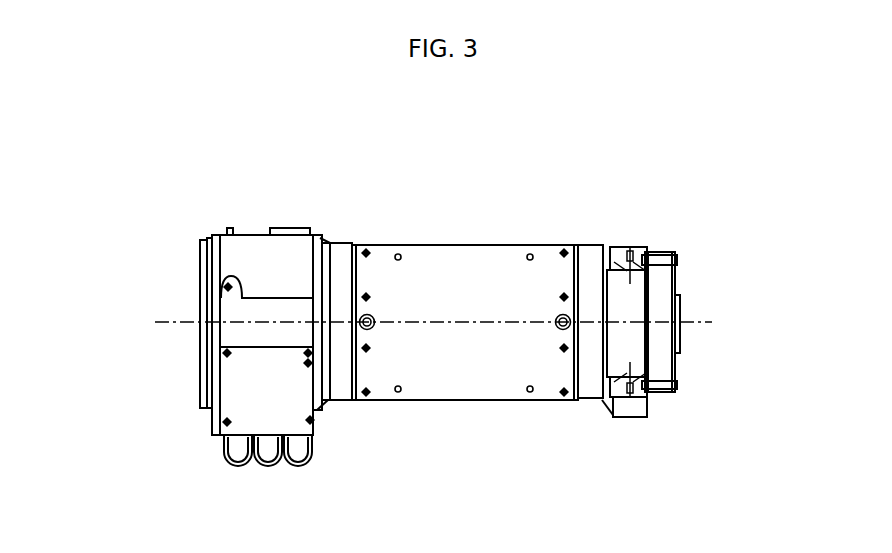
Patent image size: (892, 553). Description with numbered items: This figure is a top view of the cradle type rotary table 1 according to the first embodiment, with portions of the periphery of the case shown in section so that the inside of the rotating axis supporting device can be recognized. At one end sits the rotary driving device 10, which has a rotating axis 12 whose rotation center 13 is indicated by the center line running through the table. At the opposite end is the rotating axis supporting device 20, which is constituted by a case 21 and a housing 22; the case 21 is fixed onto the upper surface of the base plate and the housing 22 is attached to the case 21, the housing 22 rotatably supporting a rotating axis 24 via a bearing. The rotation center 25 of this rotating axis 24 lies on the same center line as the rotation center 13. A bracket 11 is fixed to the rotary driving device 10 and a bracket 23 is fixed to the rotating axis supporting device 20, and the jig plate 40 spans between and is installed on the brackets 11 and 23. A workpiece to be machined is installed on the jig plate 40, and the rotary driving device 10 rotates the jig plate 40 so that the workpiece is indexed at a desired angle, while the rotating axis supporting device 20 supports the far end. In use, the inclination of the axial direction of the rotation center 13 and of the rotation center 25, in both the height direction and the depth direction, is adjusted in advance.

The cradle type rotary table 1 is at (200, 198).
The rotary driving device 10 is at (253, 405).
The bracket 11 is at (343, 248).
The rotating axis 12 is at (200, 296).
The rotation center 13 is at (173, 322).
The rotating axis supporting device 20 is at (687, 208).
The case 21 is at (622, 393).
The housing 22 is at (660, 300).
The bracket 23 is at (580, 245).
The rotating axis 24 is at (680, 297).
The rotation center 25 is at (707, 320).
The jig plate 40 is at (452, 370).